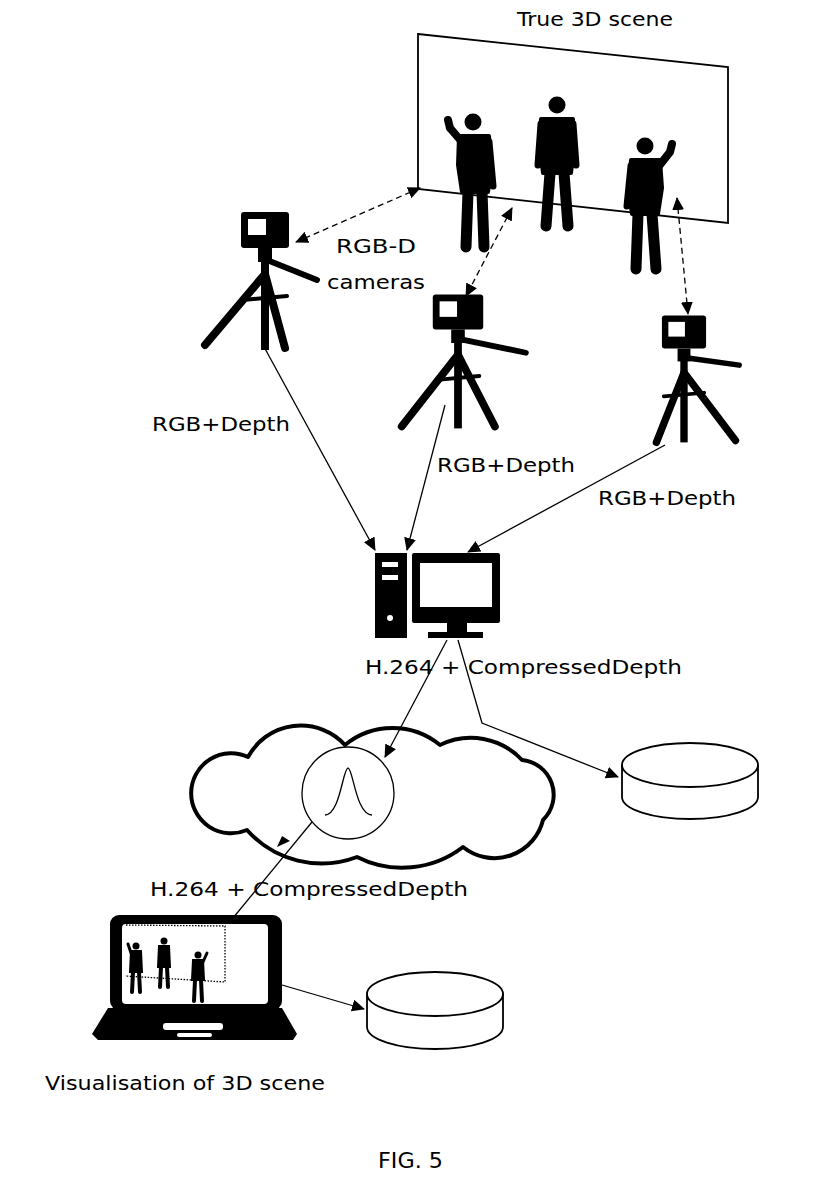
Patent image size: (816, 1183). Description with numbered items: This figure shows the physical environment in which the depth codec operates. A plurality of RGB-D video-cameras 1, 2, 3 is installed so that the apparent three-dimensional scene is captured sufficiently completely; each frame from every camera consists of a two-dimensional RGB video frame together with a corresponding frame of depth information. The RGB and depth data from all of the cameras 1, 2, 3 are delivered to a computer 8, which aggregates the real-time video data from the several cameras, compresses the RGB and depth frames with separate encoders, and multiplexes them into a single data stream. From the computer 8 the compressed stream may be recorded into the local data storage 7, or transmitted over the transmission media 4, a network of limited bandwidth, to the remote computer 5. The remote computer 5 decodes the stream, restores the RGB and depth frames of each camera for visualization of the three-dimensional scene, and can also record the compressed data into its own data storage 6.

The video-camera 1 is at (245, 216).
The video-camera 2 is at (455, 312).
The video-camera 3 is at (690, 322).
The transmission media 4 is at (238, 795).
The remote computer 5 is at (135, 930).
The data storage 6 is at (453, 997).
The data storage 7 is at (672, 762).
The computer 8 is at (465, 592).